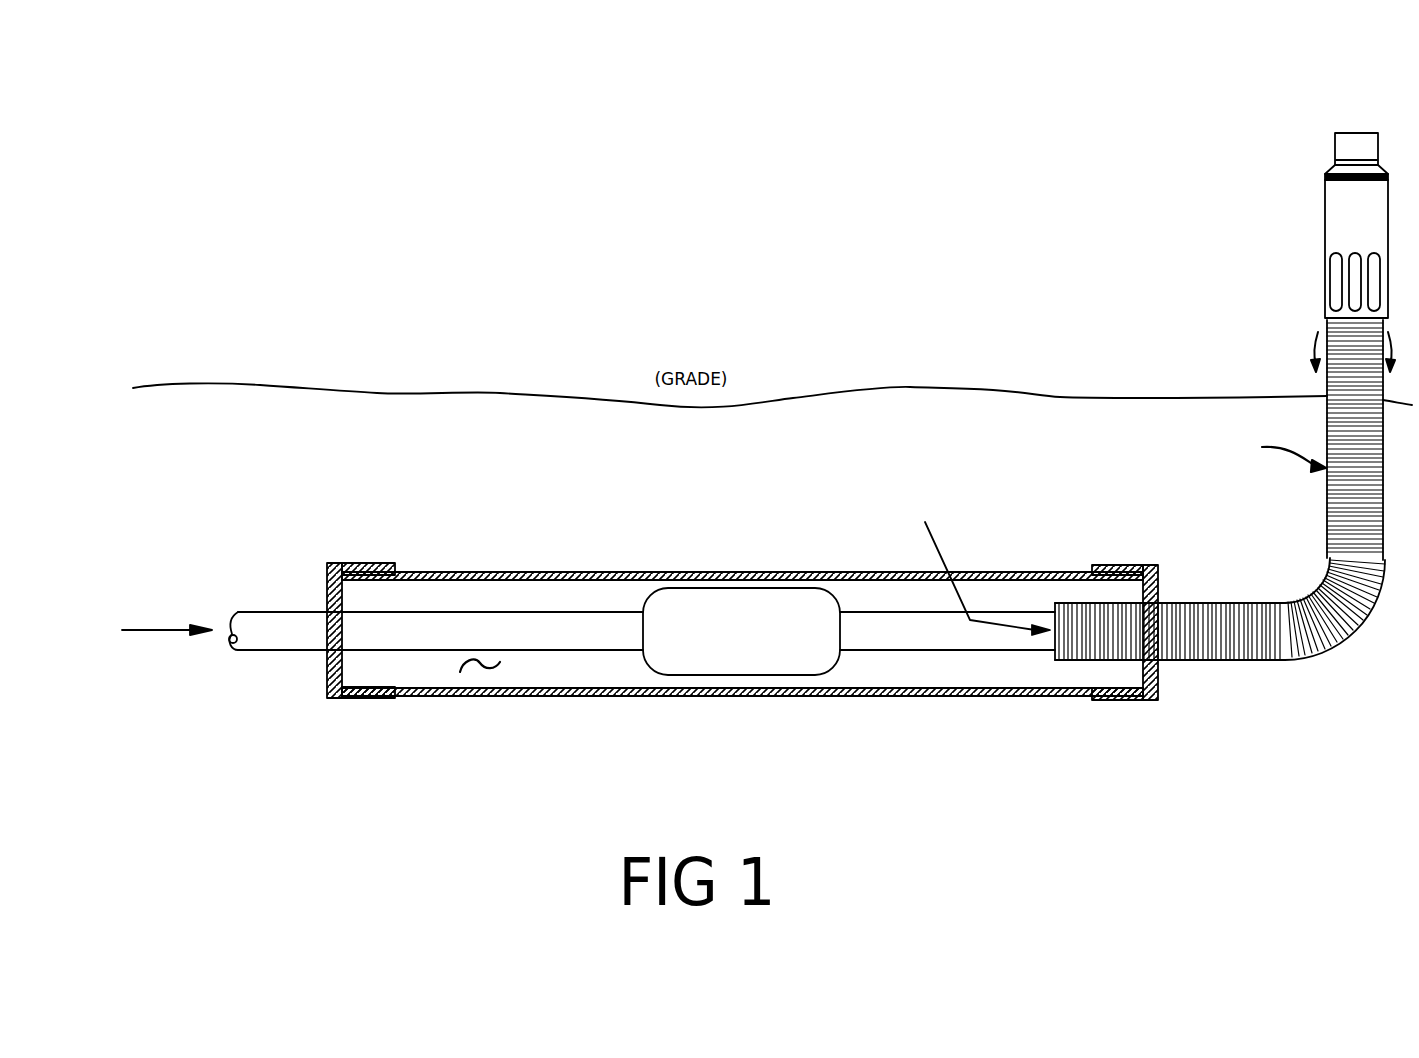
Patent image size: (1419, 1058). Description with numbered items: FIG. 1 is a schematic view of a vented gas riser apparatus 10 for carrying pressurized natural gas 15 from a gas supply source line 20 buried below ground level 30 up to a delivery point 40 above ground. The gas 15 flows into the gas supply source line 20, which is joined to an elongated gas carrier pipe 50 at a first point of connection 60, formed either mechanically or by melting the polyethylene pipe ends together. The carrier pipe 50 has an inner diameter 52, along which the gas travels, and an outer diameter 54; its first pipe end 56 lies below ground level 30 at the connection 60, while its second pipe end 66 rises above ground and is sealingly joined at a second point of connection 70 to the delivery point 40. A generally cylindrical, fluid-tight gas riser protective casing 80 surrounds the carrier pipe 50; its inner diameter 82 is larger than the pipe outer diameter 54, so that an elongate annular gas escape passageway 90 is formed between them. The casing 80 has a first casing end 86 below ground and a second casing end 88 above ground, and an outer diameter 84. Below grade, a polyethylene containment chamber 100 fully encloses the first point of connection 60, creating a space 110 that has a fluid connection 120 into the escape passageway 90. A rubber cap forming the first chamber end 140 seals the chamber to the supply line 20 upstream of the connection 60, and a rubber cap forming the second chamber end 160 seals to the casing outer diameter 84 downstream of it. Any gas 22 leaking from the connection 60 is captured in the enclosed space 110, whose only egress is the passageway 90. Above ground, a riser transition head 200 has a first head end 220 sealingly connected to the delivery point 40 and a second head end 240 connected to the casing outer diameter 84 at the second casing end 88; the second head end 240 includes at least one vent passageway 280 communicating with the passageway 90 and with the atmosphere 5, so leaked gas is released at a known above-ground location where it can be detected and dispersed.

The atmosphere 5 is at (998, 320).
The vented gas riser apparatus 10 is at (1272, 450).
The pressurized gas 15 is at (152, 608).
The gas supply source line 20 is at (230, 610).
The leaked gas 22 is at (630, 601).
The ground level 30 is at (376, 393).
The delivery point 40 is at (1345, 133).
The elongated gas carrier pipe 50 is at (957, 665).
The inner diameter of carrier pipe 52 is at (1005, 660).
The outer diameter of carrier pipe 54 is at (893, 660).
The first pipe end 56 is at (856, 603).
The first point of connection 60 is at (735, 628).
The second pipe end 66 is at (1345, 198).
The second point of connection 70 is at (1366, 131).
The gas riser protective casing 80 is at (1320, 663).
The inner diameter of casing 82 is at (1050, 605).
The outer diameter of casing 84 is at (1220, 663).
The first casing end 86 is at (1062, 665).
The second casing end 88 is at (1348, 360).
The gas escape passageway 90 is at (976, 559).
The containment chamber 100 is at (510, 572).
The space within containment chamber 110 is at (478, 690).
The fluid connection 120 is at (1037, 690).
The first chamber end 140 is at (337, 565).
The second chamber end 160 is at (1152, 565).
The riser transition head 200 is at (1325, 230).
The first head end 220 is at (1335, 145).
The second head end 240 is at (1330, 285).
The vent passageway 280 is at (1328, 323).